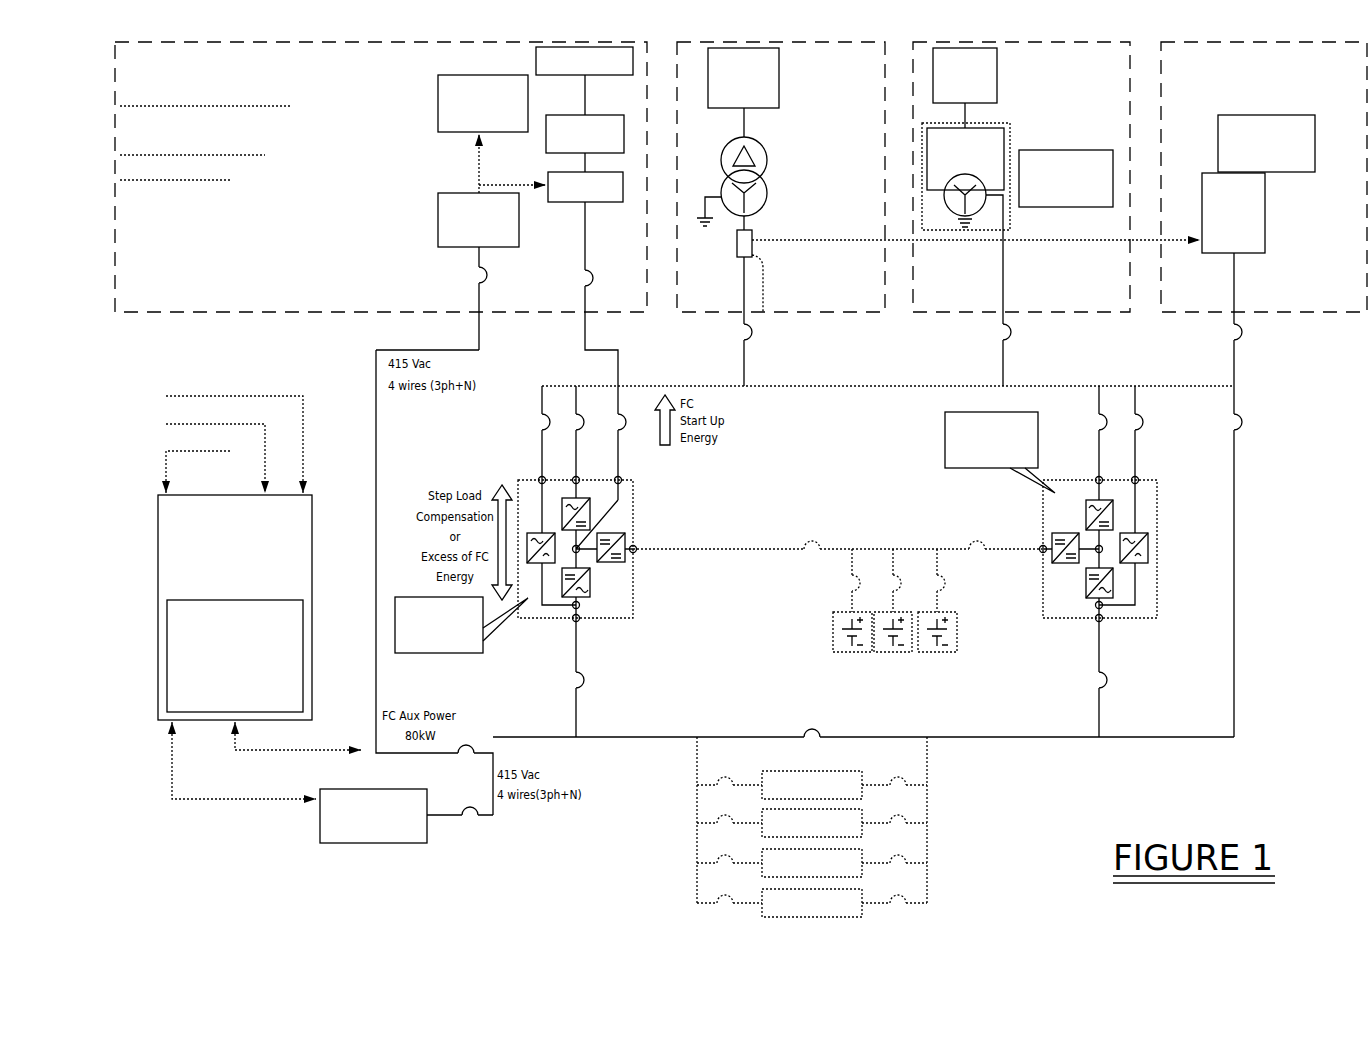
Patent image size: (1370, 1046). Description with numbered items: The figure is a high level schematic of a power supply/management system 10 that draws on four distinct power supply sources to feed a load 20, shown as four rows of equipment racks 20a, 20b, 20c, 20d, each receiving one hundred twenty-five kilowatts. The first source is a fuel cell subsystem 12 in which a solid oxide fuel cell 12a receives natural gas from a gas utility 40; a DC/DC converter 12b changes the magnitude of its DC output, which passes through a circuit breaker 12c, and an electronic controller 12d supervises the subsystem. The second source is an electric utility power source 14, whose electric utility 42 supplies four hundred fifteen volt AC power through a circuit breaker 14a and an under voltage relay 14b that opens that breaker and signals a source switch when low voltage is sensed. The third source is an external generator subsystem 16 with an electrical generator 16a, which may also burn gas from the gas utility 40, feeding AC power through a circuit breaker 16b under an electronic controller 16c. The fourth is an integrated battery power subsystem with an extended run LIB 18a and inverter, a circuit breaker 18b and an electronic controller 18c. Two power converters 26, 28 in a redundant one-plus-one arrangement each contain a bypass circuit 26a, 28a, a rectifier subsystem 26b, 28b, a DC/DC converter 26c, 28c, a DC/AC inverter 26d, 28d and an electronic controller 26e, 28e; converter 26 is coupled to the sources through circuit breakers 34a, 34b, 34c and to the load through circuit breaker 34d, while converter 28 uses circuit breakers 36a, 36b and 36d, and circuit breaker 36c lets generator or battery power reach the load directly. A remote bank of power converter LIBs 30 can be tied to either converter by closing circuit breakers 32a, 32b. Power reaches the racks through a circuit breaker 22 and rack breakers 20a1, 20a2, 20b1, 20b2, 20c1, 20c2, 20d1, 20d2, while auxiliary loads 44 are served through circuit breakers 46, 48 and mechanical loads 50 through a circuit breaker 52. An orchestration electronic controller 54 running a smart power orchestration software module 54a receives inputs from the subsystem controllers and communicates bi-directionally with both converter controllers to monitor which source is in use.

The power supply/management system 10 is at (208, 33).
The fuel cell subsystem 12 is at (647, 68).
The fuel cell 12a is at (582, 115).
The DC/DC converter 12b is at (598, 202).
The circuit breaker 12c is at (592, 283).
The electronic controller 12d is at (483, 103).
The electric utility power source 14 is at (885, 75).
The circuit breaker 14a is at (755, 333).
The under voltage relay 14b is at (737, 246).
The external generator subsystem 16 is at (1130, 70).
The electrical generator 16a is at (1003, 128).
The circuit breaker 16b is at (997, 332).
The electronic controller 16c is at (1066, 178).
The extended run LIB 18a is at (1265, 226).
The circuit breaker 18b is at (1228, 332).
The electronic controller 18c is at (1264, 177).
The load 20 is at (834, 811).
The equipment rack 20a is at (845, 771).
The circuit breaker 20a1 is at (705, 783).
The circuit breaker 20a2 is at (908, 785).
The equipment rack 20b is at (862, 831).
The circuit breaker 20b1 is at (716, 826).
The circuit breaker 20b2 is at (908, 823).
The equipment rack 20c is at (862, 871).
The circuit breaker 20c1 is at (716, 862).
The circuit breaker 20c2 is at (908, 863).
The equipment rack 20d is at (862, 911).
The circuit breaker 20d1 is at (716, 903).
The circuit breaker 20d2 is at (908, 903).
The circuit breaker 22 is at (804, 730).
The power converter 26 is at (608, 534).
The bypass circuit 26a is at (535, 533).
The rectifier subsystem 26b is at (578, 498).
The DC/DC converter 26c is at (625, 555).
The DC/AC inverter 26d is at (590, 585).
The electronic controller 26e is at (461, 625).
The power converter 28 is at (1112, 528).
The bypass circuit 28a is at (1148, 546).
The rectifier subsystem 28b is at (1093, 500).
The DC/DC converter 28c is at (1052, 541).
The DC/AC inverter 28d is at (1086, 586).
The electronic controller 28e is at (1000, 452).
The power converter LIBs 30 is at (805, 626).
The circuit breaker 32a is at (804, 546).
The circuit breaker 32b is at (969, 546).
The circuit breaker 34a is at (535, 422).
The circuit breaker 34b is at (571, 420).
The circuit breaker 34c is at (626, 420).
The circuit breaker 34d is at (570, 683).
The circuit breaker 36a is at (1092, 421).
The circuit breaker 36b is at (1141, 426).
The circuit breaker 36c is at (1240, 420).
The circuit breaker 36d is at (1092, 682).
The gas utility 40 is at (536, 64).
The electric utility 42 is at (779, 100).
The auxiliary loads 44 is at (438, 217).
The circuit breaker 46 is at (487, 279).
The circuit breaker 48 is at (466, 756).
The mechanical loads 50 is at (320, 826).
The circuit breaker 52 is at (470, 823).
The orchestration electronic controller 54 is at (259, 602).
The smart power orchestration software module 54a is at (235, 656).